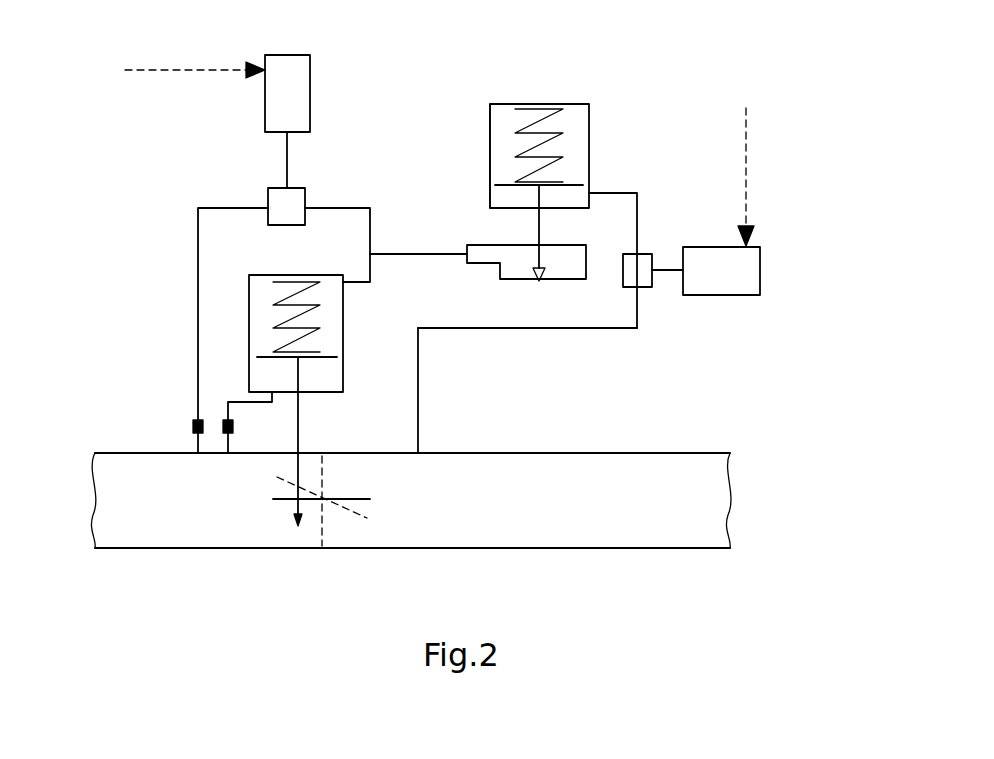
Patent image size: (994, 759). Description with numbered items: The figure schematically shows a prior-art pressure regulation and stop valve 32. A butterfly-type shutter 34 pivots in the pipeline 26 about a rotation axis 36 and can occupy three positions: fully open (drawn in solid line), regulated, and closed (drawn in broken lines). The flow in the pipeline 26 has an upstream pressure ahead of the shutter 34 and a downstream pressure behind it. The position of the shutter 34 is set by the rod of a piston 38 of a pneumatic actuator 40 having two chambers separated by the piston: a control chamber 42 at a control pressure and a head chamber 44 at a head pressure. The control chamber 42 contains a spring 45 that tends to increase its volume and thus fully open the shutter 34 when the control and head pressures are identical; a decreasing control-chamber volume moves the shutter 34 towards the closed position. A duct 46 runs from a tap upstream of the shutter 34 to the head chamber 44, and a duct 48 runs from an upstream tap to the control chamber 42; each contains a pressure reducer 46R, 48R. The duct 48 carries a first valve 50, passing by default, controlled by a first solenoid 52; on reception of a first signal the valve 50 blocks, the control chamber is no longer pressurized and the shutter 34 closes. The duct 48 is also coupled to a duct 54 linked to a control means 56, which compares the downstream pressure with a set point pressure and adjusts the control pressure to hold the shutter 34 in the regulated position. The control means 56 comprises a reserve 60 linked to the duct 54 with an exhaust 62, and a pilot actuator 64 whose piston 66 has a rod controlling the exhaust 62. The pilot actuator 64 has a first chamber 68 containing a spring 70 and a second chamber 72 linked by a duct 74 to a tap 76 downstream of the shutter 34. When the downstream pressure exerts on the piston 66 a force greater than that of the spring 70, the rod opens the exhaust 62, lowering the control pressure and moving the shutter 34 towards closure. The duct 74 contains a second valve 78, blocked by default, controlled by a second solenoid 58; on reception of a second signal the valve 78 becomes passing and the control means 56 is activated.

The pipeline 26 is at (532, 453).
The pressure regulation and stop valve 32 is at (546, 172).
The shutter 34 is at (363, 500).
The rotation axis 36 is at (322, 500).
The piston 38 is at (323, 360).
The actuator 40 is at (258, 306).
The control chamber 42 is at (261, 279).
The head chamber 44 is at (257, 385).
The spring 45 is at (287, 318).
The duct 46 is at (263, 405).
The pressure reducer 46R is at (228, 420).
The duct 48 is at (197, 340).
The pressure reducer 48R is at (193, 428).
The first valve 50 is at (268, 193).
The first solenoid 52 is at (312, 60).
The duct 54 is at (403, 253).
The control means 56 is at (718, 218).
The second solenoid 58 is at (742, 297).
The reserve 60 is at (492, 265).
The exhaust 62 is at (545, 284).
The pilot actuator 64 is at (590, 143).
The piston 66 is at (496, 190).
The first chamber 68 is at (490, 147).
The spring 70 is at (548, 112).
The second chamber 72 is at (578, 198).
The duct 74 is at (582, 332).
The tap 76 is at (421, 452).
The second valve 78 is at (640, 288).